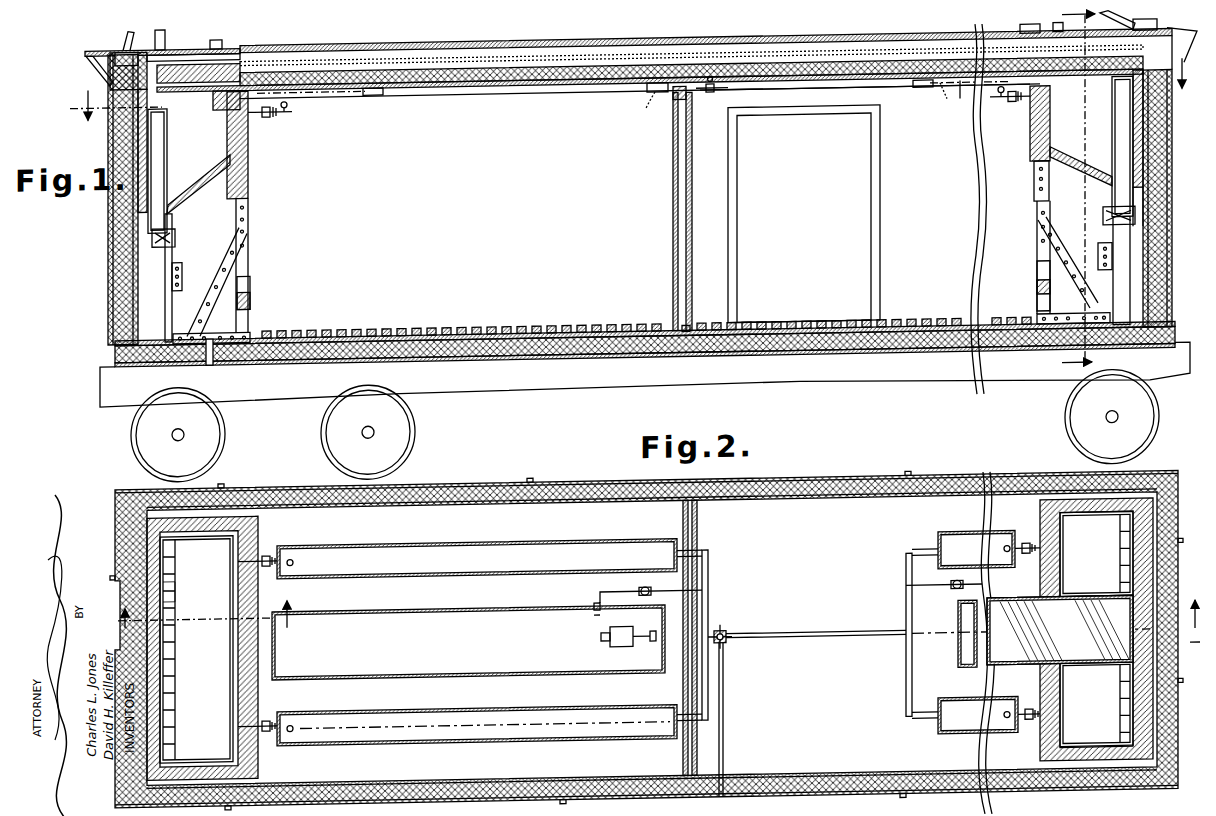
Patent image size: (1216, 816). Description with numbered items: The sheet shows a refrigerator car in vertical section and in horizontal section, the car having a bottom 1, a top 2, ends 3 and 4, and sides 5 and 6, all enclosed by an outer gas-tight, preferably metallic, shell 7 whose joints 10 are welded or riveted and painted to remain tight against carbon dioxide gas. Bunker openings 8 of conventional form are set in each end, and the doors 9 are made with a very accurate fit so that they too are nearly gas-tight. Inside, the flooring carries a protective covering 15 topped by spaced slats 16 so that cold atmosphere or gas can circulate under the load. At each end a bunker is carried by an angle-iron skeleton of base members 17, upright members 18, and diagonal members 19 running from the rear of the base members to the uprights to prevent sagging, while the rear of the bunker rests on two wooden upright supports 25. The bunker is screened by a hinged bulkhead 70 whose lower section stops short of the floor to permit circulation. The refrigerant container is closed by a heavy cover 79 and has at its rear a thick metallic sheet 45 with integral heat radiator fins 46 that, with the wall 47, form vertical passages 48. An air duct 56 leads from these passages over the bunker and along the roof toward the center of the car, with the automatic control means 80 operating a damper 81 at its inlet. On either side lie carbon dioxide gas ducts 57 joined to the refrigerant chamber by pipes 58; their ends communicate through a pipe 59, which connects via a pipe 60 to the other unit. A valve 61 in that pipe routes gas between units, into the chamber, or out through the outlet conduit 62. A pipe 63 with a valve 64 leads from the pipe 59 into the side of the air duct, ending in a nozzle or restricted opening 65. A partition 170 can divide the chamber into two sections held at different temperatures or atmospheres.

In FIG. 1, the bottom 1 is at (504, 369).
In FIG. 2, the bottom 1 is at (1200, 637).
In FIG. 1, the top 2 is at (540, 66).
In FIG. 1, the end 3 is at (1168, 232).
In FIG. 2, the end 3 is at (1178, 500).
In FIG. 1, the end 4 is at (125, 242).
In FIG. 2, the end 4 is at (125, 522).
In FIG. 2, the side 5 is at (962, 757).
In FIG. 2, the side 6 is at (913, 492).
In FIG. 1, the outer gas-tight shell 7 is at (110, 267).
In FIG. 2, the outer gas-tight shell 7 is at (280, 491).
In FIG. 1, the bunker openings 8 is at (200, 66).
In FIG. 1, the doors 9 is at (862, 197).
In FIG. 2, the doors 9 is at (820, 492).
In FIG. 2, the joints 10 is at (405, 490).
In FIG. 1, the covering 15 is at (593, 336).
In FIG. 1, the slats 16 is at (395, 336).
In FIG. 1, the base members 17 is at (220, 360).
In FIG. 1, the upright members 18 is at (251, 292).
In FIG. 1, the diagonal members 19 is at (226, 280).
In FIG. 1, the upright supports 25 is at (168, 256).
In FIG. 2, the heavy metallic sheet 45 is at (180, 641).
In FIG. 2, the heat radiator fins 46 is at (172, 562).
In FIG. 2, the wall 47 is at (152, 540).
In FIG. 1, the vertically disposed passages 48 is at (163, 151).
In FIG. 2, the vertically disposed passages 48 is at (180, 603).
In FIG. 1, the air duct 56 is at (965, 118).
In FIG. 2, the air duct 56 is at (438, 617).
In FIG. 1, the carbon dioxide gas ducts 57 is at (360, 102).
In FIG. 2, the carbon dioxide gas ducts 57 is at (447, 550).
In FIG. 1, the pipes 58 is at (281, 121).
In FIG. 2, the pipes 58 is at (263, 560).
In FIG. 2, the pipe 59 is at (708, 610).
In FIG. 1, the pipe 60 is at (806, 103).
In FIG. 2, the pipe 60 is at (830, 647).
In FIG. 1, the valve 61 is at (709, 106).
In FIG. 2, the valve 61 is at (728, 656).
In FIG. 2, the outlet conduit 62 is at (726, 728).
In FIG. 2, the pipe 63 is at (600, 604).
In FIG. 2, the valve 64 is at (646, 598).
In FIG. 2, the nozzle or restricted opening 65 is at (595, 628).
In FIG. 1, the bulkhead 70 is at (250, 190).
In FIG. 1, the cover 79 is at (215, 104).
In FIG. 2, the automatic control means 80 is at (610, 655).
In FIG. 1, the damper 81 is at (797, 101).
In FIG. 1, the partition 170 is at (673, 237).
In FIG. 2, the partition 170 is at (698, 540).